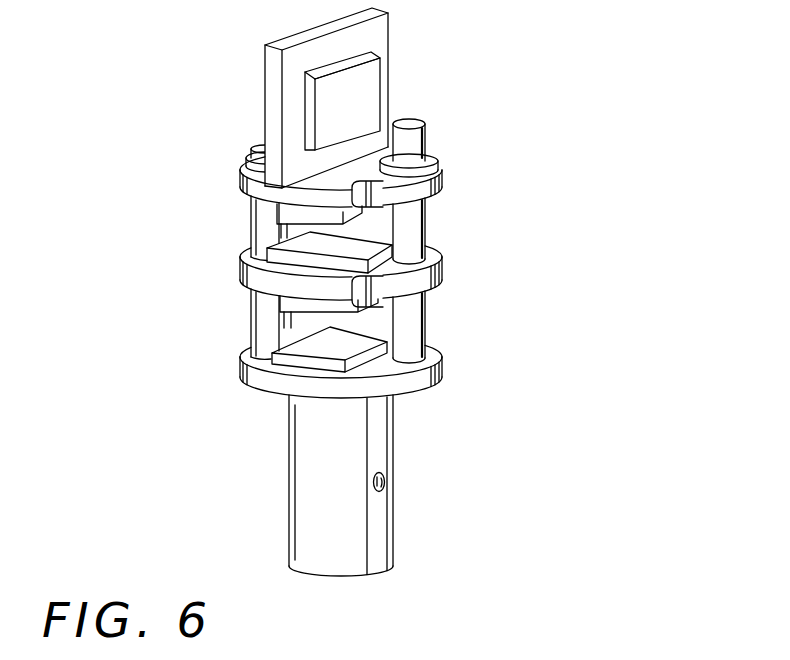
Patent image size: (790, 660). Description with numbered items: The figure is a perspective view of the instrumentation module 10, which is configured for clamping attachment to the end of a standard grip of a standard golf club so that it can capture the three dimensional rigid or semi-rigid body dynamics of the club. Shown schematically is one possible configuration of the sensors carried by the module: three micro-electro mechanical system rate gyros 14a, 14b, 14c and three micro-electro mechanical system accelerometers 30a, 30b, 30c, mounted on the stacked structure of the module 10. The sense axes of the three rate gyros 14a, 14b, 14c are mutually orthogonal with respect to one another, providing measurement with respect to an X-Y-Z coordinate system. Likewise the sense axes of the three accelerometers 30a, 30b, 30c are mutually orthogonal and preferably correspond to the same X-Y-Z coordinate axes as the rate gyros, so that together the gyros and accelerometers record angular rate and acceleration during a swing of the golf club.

The instrumentation module 10 is at (560, 169).
The micro-electro mechanical system rate gyro 14a is at (251, 84).
The micro-electro mechanical system rate gyro 14b is at (277, 224).
The micro-electro mechanical system rate gyro 14c is at (275, 241).
The micro-electro mechanical system accelerometer 30a is at (368, 87).
The micro-electro mechanical system accelerometer 30b is at (372, 318).
The micro-electro mechanical system accelerometer 30c is at (362, 346).